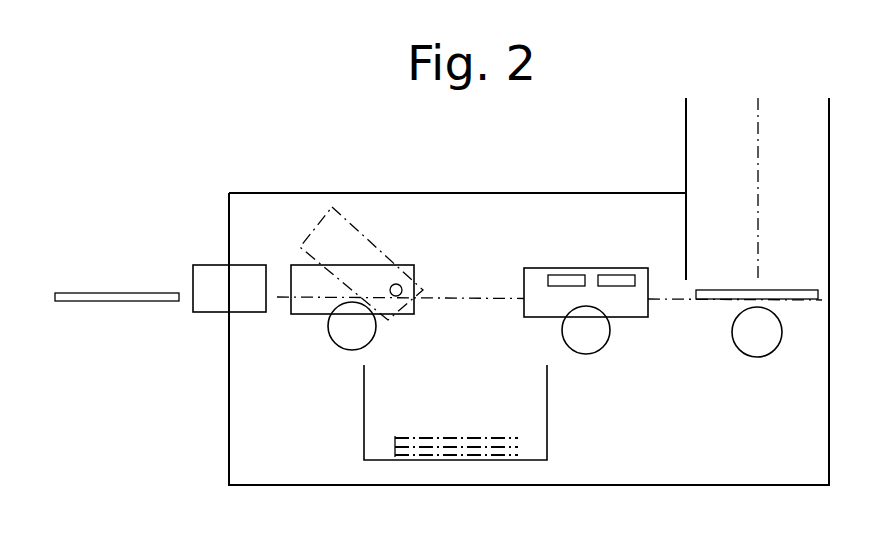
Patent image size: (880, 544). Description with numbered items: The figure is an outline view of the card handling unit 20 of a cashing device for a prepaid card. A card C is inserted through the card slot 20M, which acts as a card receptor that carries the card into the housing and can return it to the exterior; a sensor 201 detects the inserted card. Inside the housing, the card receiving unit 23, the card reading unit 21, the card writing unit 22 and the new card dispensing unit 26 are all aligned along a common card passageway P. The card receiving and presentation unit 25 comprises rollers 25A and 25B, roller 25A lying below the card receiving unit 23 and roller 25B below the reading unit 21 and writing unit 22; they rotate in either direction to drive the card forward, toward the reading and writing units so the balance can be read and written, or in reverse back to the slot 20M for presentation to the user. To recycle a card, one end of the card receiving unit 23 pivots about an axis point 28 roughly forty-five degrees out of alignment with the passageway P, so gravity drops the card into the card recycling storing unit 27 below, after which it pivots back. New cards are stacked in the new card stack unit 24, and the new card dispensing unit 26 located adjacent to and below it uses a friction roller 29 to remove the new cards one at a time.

The card handling unit 20 is at (320, 192).
The card slot 20M is at (205, 265).
The sensor 201 is at (207, 322).
The card C is at (90, 293).
The card passageway P is at (477, 295).
The card reading unit 21 is at (562, 280).
The card writing unit 22 is at (615, 280).
The card receiving unit 23 is at (298, 265).
The new card stack unit 24 is at (686, 125).
The card receiving and presentation unit 25 is at (319, 467).
The roller 25A is at (338, 350).
The roller 25B is at (593, 348).
The new card dispensing unit 26 is at (768, 373).
The card recycling storing unit 27 is at (448, 461).
The axis point 28 is at (402, 285).
The friction roller 29 is at (737, 350).